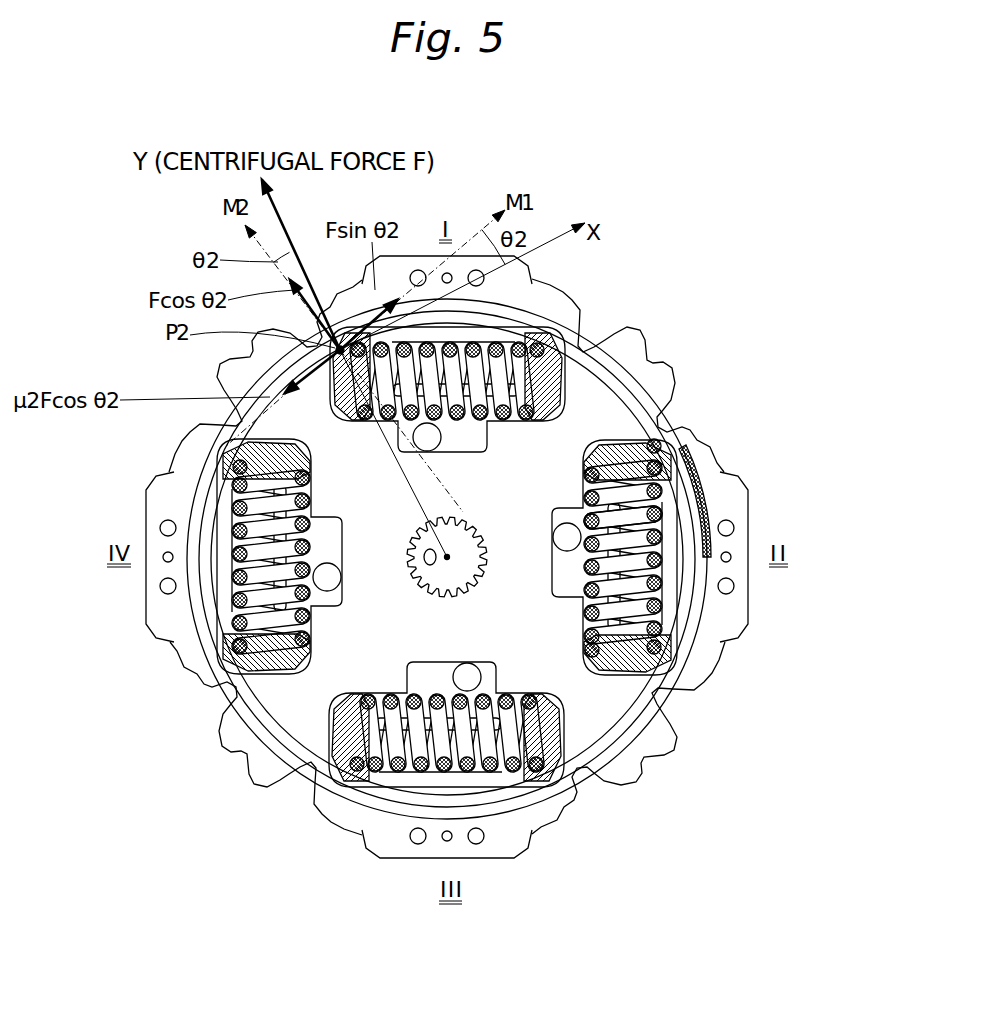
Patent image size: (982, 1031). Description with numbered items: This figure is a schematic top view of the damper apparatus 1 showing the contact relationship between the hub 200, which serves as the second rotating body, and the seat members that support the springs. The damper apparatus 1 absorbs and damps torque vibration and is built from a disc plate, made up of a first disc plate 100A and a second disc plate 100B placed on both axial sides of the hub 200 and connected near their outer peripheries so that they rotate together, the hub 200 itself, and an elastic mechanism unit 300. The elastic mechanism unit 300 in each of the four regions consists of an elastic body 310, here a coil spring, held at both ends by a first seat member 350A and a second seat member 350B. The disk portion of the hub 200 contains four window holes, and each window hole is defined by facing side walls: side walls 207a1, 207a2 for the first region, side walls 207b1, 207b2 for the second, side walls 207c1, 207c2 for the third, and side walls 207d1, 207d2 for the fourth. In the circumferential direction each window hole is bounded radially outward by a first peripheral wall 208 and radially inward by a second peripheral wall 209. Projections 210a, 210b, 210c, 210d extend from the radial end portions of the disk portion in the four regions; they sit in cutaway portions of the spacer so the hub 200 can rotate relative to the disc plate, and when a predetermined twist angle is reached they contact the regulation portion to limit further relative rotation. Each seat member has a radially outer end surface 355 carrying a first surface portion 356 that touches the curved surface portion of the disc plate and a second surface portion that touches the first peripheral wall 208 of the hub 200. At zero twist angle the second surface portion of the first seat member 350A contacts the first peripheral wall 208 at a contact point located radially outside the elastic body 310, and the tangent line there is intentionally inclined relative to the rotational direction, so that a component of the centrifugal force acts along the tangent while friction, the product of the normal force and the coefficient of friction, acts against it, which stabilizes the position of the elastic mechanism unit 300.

The damper apparatus 1 is at (690, 240).
The hub 200 is at (633, 740).
The projection 210a is at (662, 358).
The projection 210b is at (665, 745).
The projection 210c is at (230, 745).
The projection 210d is at (240, 385).
The first disc plate 100A is at (698, 403).
The second disc plate 100B is at (447, 559).
The radially outer end surface 355 is at (676, 462).
The first surface portion 356 is at (695, 501).
The first peripheral wall 208 is at (528, 343).
The second peripheral wall 209 is at (398, 700).
The side wall on one end side 207a1 is at (335, 372).
The side wall on the other end side 207a2 is at (560, 348).
The side wall on one end side 207b1 is at (650, 452).
The side wall on the other end side 207b2 is at (640, 665).
The side wall on one end side 207c1 is at (555, 745).
The side wall on the other end side 207c2 is at (350, 700).
The side wall on one end side 207d1 is at (245, 658).
The side wall on the other end side 207d2 is at (238, 468).
The elastic mechanism unit 300 is at (651, 600).
The elastic body 310 is at (650, 512).
The first seat member 350A is at (665, 468).
The second seat member 350B is at (655, 665).